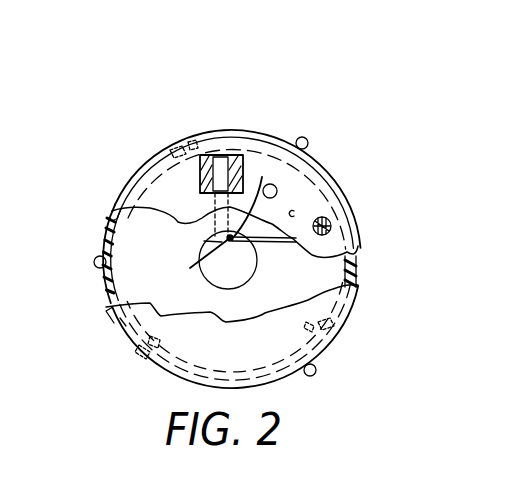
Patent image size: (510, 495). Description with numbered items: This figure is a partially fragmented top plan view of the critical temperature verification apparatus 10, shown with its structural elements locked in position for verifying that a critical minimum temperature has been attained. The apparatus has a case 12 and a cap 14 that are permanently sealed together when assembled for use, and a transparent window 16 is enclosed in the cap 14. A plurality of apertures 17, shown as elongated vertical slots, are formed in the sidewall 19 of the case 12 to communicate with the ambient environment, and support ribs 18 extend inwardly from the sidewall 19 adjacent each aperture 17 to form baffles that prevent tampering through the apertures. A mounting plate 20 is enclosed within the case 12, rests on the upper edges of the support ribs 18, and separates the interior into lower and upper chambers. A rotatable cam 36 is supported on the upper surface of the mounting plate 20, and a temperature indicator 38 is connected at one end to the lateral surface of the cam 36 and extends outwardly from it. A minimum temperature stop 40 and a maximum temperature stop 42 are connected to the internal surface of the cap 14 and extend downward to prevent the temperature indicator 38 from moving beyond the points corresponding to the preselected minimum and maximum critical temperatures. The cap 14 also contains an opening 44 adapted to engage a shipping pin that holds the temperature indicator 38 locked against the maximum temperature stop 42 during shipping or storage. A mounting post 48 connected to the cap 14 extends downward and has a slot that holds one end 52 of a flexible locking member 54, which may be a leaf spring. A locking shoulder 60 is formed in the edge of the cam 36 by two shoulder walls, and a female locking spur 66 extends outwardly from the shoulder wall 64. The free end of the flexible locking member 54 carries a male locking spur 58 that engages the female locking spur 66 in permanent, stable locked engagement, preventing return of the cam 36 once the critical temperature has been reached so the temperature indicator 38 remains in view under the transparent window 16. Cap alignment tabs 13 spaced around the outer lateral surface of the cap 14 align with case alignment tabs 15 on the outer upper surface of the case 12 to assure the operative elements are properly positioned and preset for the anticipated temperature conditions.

The critical temperature verification apparatus 10 is at (124, 153).
The case 12 is at (108, 289).
The cap alignment tabs 13 is at (302, 137).
The cap 14 is at (113, 322).
The case alignment tabs 15 is at (96, 257).
The transparent window 16 is at (215, 157).
The apertures 17 is at (172, 148).
The support ribs 18 is at (192, 141).
The sidewall 19 is at (106, 277).
The mounting plate 20 is at (114, 222).
The rotatable cam 36 is at (200, 244).
The temperature indicator 38 is at (240, 155).
The minimum temperature stop 40 is at (201, 209).
The maximum temperature stop 42 is at (298, 213).
The opening 44 is at (278, 191).
The mounting post 48 is at (336, 224).
The end of flexible locking member 52 is at (298, 240).
The flexible locking member 54 is at (275, 244).
The male locking spur 58 is at (226, 239).
The locking shoulder 60 is at (243, 250).
The shoulder wall 64 is at (198, 258).
The female locking spur 66 is at (252, 197).